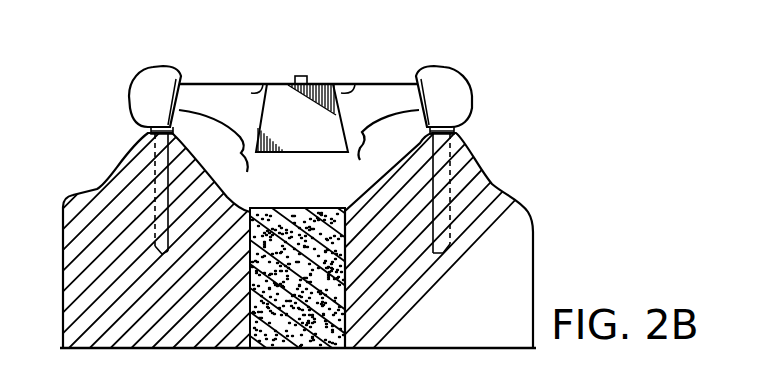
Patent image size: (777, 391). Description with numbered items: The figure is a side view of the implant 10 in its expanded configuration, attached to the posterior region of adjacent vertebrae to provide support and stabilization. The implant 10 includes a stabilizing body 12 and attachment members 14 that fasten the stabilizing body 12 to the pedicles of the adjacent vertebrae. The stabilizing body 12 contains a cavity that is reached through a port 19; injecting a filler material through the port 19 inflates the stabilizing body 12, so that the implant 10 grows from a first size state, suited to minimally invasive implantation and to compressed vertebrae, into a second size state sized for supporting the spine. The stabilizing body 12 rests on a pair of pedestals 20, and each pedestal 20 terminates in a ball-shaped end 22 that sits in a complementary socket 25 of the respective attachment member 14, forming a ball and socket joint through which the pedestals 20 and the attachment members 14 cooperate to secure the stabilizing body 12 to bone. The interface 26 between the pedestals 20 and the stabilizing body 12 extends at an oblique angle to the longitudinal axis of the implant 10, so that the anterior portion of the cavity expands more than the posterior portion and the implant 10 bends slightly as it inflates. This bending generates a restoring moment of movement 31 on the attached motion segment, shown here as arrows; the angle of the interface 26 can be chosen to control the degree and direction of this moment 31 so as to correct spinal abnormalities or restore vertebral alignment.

The implant 10 is at (347, 38).
The stabilizing body 12 is at (314, 79).
The attachment members 14 is at (148, 133).
The port 19 is at (295, 76).
The pedestals 20 is at (299, 150).
The ball-shaped end 22 is at (174, 129).
The socket 25 is at (189, 67).
The interface 26 is at (263, 84).
The restoring moment of movement 31 is at (37, 259).